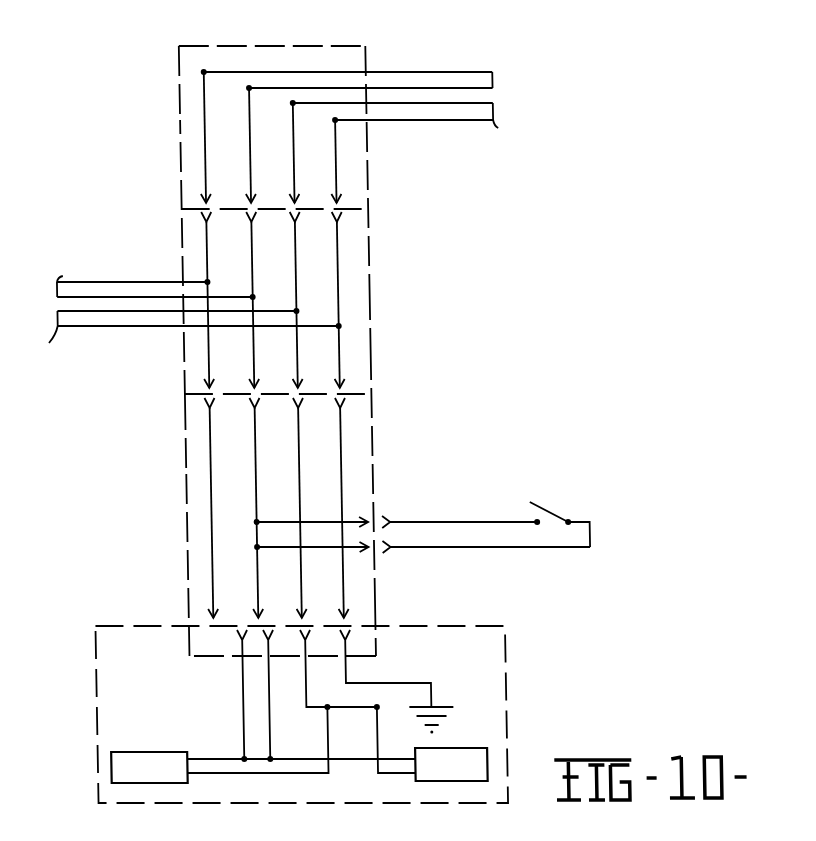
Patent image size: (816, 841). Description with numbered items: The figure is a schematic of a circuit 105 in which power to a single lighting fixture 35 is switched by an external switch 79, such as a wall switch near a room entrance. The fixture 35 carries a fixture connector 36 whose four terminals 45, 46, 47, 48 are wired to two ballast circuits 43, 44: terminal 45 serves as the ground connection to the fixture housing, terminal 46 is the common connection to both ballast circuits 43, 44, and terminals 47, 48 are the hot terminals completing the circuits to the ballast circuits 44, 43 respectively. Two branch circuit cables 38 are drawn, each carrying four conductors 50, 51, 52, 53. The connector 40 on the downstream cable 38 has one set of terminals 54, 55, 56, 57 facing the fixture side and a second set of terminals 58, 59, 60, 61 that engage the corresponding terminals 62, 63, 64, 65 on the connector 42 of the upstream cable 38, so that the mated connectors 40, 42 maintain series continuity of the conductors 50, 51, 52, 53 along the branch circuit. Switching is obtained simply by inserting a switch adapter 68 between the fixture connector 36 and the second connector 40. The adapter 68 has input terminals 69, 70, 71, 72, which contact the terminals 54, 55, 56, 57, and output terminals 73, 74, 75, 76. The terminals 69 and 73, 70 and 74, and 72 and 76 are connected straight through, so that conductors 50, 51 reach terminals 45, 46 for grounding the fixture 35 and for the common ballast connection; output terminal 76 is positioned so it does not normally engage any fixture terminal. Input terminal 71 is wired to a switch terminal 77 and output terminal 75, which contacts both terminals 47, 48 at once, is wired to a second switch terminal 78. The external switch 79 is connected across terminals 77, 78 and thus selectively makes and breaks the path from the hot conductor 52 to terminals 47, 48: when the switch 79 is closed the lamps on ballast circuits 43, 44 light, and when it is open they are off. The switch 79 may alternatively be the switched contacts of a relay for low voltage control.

The circuit 105 is at (178, 62).
The connector 42 is at (263, 44).
The branch circuit cable 38 is at (281, 213).
The conductor 52 is at (415, 60).
The conductor 53 is at (459, 52).
The conductor 51 is at (408, 105).
The conductor 50 is at (475, 120).
The terminal 65 is at (230, 192).
The terminal 64 is at (257, 202).
The terminal 63 is at (318, 192).
The terminal 62 is at (343, 202).
The terminal 61 is at (214, 214).
The terminal 60 is at (259, 214).
The terminal 59 is at (303, 214).
The terminal 58 is at (345, 217).
The connector 40 is at (373, 318).
The terminal 57 is at (228, 377).
The terminal 56 is at (273, 377).
The terminal 55 is at (317, 377).
The terminal 54 is at (344, 386).
The input terminal 72 is at (214, 400).
The input terminal 71 is at (259, 400).
The input terminal 70 is at (303, 400).
The input terminal 69 is at (345, 404).
The switch adapter 68 is at (183, 432).
The switch terminal 77 is at (366, 516).
The second switch terminal 78 is at (366, 551).
The external switch 79 is at (547, 508).
The output terminal 76 is at (226, 610).
The output terminal 75 is at (272, 610).
The output terminal 74 is at (315, 610).
The output terminal 73 is at (356, 610).
The fixture connector 36 is at (374, 633).
The lighting fixture 35 is at (470, 619).
The terminal 48 is at (233, 633).
The terminal 47 is at (268, 640).
The terminal 46 is at (338, 668).
The terminal 45 is at (346, 634).
The ballast circuit 43 is at (178, 746).
The ballast circuit 44 is at (434, 747).